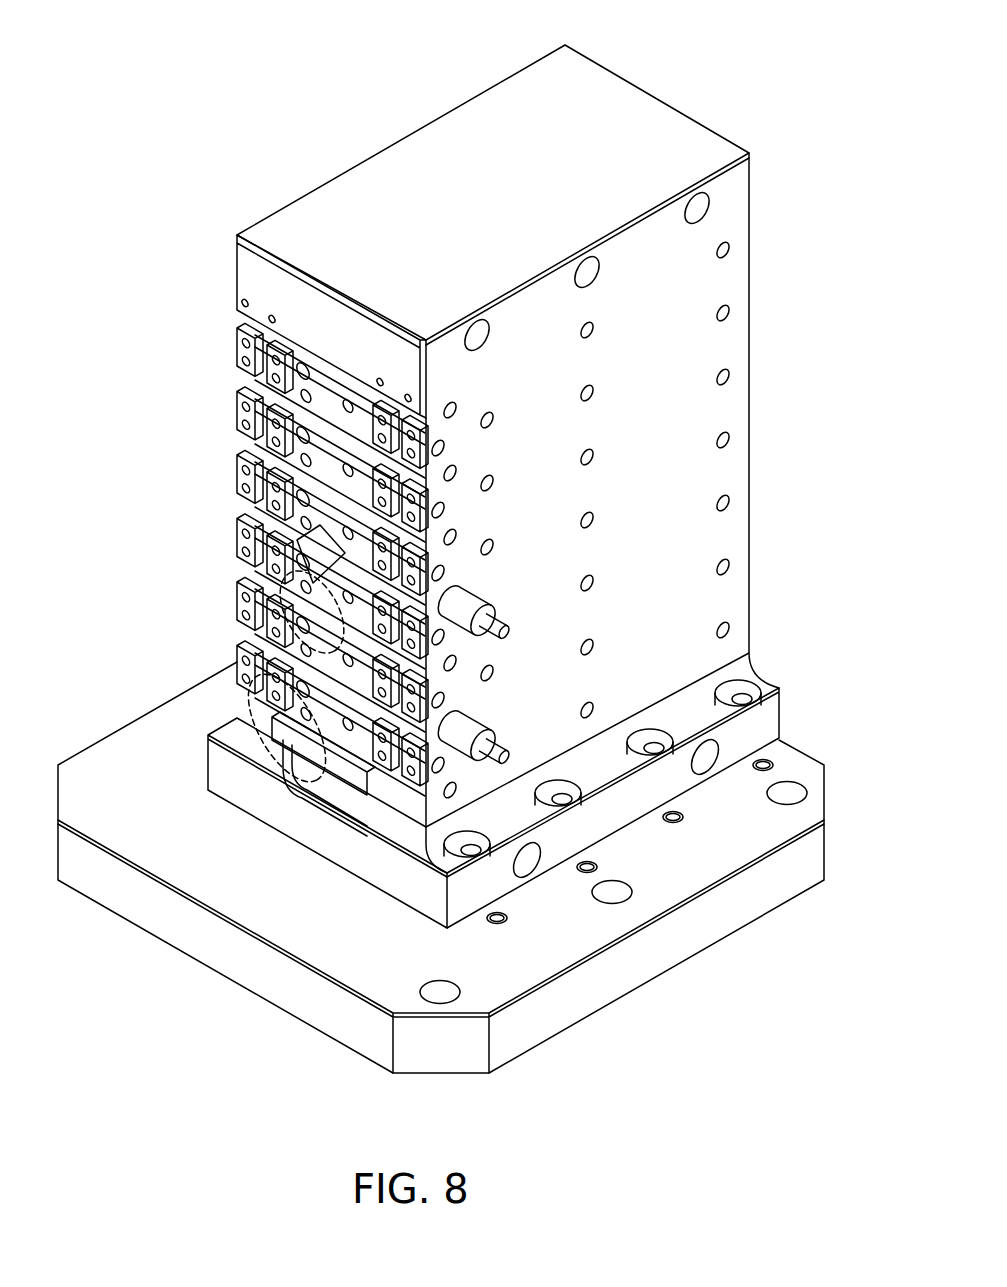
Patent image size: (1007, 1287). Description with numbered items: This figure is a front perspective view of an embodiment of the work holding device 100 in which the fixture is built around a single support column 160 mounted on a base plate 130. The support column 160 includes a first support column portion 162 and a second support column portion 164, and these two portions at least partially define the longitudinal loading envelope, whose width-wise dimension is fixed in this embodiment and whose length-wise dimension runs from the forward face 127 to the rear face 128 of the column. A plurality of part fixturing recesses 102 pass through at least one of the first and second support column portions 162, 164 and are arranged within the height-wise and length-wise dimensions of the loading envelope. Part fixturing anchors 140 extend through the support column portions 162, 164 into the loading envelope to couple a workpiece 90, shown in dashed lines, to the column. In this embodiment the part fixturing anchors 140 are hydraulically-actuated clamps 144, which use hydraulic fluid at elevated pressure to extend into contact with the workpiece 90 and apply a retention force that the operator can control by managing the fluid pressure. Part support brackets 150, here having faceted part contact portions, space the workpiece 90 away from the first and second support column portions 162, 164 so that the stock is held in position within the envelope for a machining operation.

The work holding device 100 is at (158, 96).
The support column 160 is at (357, 180).
The forward face 127 is at (241, 273).
The rear face 128 is at (752, 222).
The second support column portion 164 is at (745, 405).
The part fixturing recesses 102 is at (458, 468).
The part fixturing anchors 140 is at (492, 592).
The hydraulically-actuated clamps 144 is at (490, 604).
The part support brackets 150 is at (315, 497).
The first support column portion 162 is at (237, 346).
The workpiece 90 is at (308, 660).
The base plate 130 is at (810, 768).